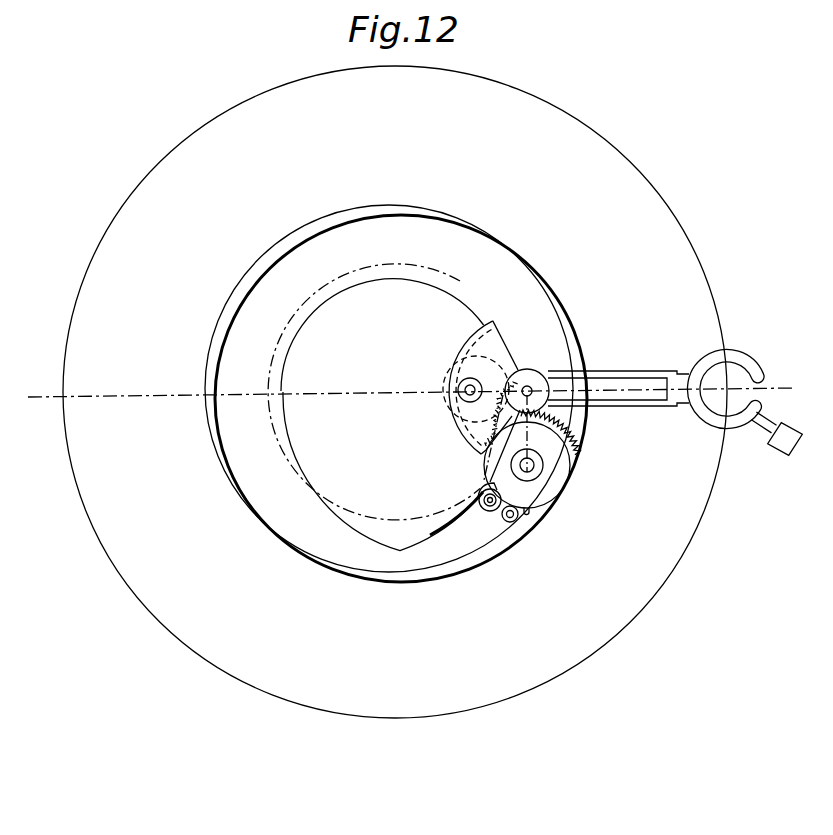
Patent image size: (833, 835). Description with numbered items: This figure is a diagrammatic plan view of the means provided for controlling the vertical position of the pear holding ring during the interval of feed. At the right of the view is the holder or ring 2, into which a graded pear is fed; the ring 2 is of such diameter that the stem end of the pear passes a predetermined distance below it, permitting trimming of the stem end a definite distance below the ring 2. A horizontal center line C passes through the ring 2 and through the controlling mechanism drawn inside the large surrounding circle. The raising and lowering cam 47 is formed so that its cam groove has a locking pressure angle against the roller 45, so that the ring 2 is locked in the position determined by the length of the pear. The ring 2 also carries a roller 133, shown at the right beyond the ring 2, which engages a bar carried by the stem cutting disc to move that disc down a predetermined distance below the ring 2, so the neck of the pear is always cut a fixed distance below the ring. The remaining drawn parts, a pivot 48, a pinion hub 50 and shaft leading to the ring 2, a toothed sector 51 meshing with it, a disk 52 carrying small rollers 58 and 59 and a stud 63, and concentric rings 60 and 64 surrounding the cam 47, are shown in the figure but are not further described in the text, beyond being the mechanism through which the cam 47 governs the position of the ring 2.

The ring 2 is at (728, 352).
The roller 45 is at (466, 388).
The raising and lowering cam 47 is at (507, 348).
The pivot pin 48 is at (531, 388).
The pinion hub 50 is at (550, 413).
The toothed sector 51 is at (563, 434).
The disk 52 is at (553, 487).
The roller 58 is at (511, 523).
The roller 59 is at (490, 514).
The ring 60 is at (338, 553).
The stud 63 is at (530, 515).
The ring groove 64 is at (517, 292).
The roller 133 is at (776, 451).
The center line C is at (171, 396).